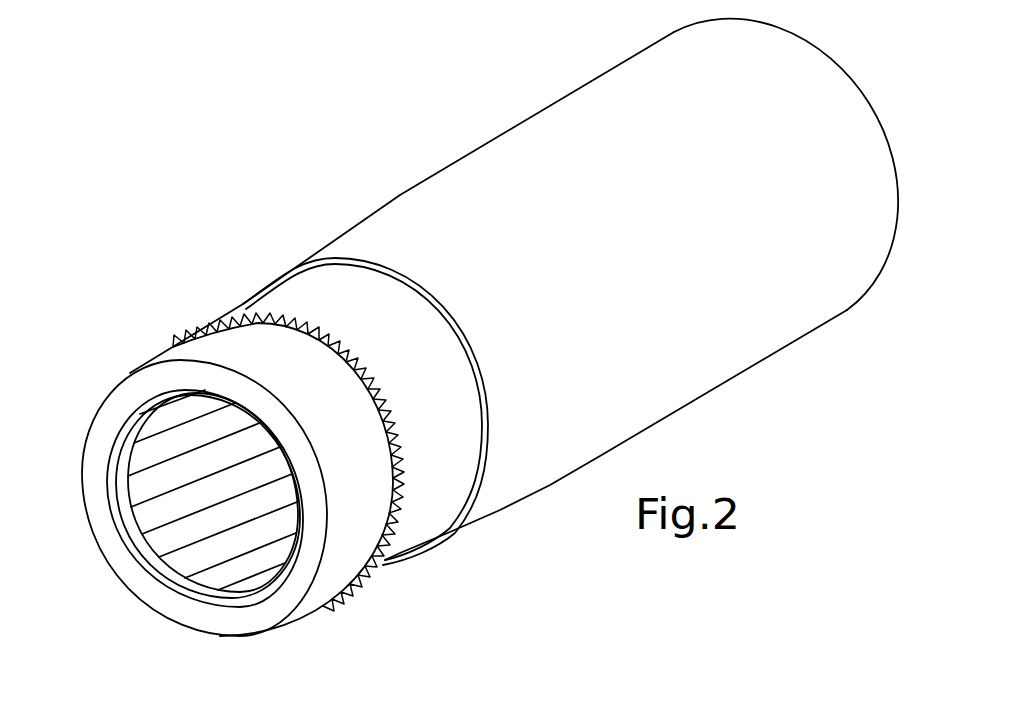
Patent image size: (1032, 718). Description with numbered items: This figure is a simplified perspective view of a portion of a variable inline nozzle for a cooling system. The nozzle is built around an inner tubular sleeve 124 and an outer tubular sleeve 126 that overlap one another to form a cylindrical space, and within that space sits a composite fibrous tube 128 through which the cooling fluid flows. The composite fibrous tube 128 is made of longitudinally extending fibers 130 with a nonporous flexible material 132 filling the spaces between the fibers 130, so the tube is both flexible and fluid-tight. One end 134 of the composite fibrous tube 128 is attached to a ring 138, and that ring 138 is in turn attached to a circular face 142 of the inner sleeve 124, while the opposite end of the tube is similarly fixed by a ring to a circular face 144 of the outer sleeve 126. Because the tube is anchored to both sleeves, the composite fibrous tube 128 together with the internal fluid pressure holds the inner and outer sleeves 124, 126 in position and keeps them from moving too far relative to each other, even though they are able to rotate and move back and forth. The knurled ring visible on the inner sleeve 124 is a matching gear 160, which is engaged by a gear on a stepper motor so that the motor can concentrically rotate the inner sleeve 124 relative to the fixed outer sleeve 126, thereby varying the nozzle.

The inner tubular sleeve 124 is at (302, 283).
The outer tubular sleeve 126 is at (552, 90).
The composite fibrous tube 128 is at (219, 580).
The longitudinally extending fibers 130 is at (200, 567).
The nonporous flexible material 132 is at (253, 580).
The end of composite fibrous tube 134 is at (147, 539).
The ring 138 is at (130, 509).
The circular face 142 is at (97, 472).
The circular face 144 is at (832, 62).
The matching gear 160 is at (355, 590).